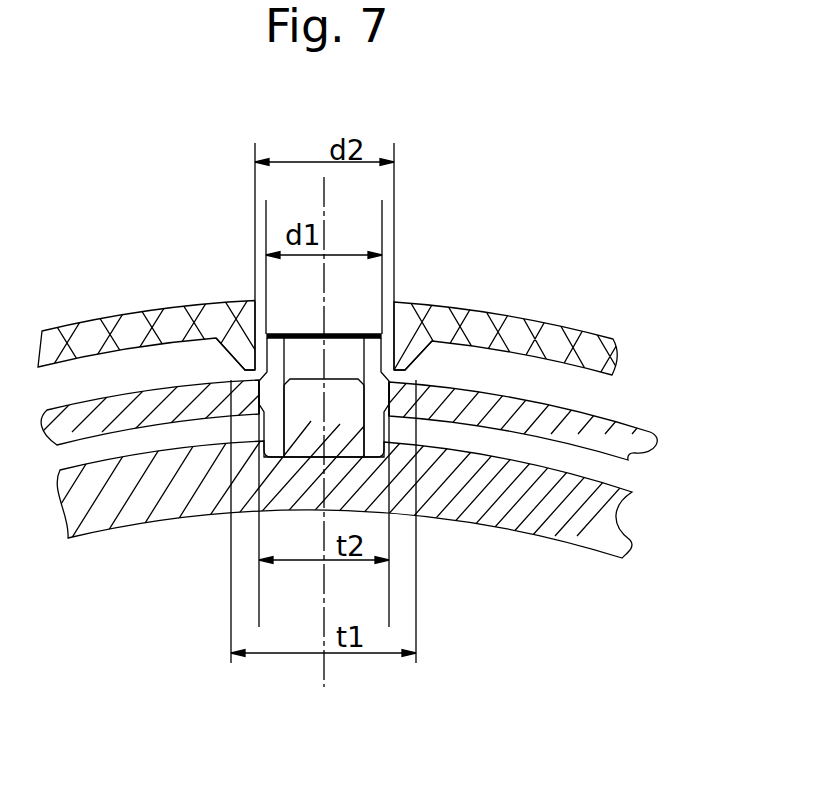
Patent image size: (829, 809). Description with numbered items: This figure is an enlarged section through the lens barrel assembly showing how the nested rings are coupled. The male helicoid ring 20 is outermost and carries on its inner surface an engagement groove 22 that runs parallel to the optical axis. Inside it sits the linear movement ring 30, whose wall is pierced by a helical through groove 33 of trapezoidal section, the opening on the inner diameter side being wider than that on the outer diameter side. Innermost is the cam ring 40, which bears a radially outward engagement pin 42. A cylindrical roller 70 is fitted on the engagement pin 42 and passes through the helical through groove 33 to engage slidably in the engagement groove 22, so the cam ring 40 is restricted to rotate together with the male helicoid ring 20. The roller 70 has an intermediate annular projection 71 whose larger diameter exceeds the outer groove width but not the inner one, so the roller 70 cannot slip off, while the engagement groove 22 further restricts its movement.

The male helicoid ring 20 is at (481, 332).
The engagement groove 22 is at (395, 363).
The linear movement ring 30 is at (612, 426).
The helical through groove 33 is at (398, 405).
The cam ring 40 is at (597, 527).
The engagement pin 42 is at (337, 438).
The cylindrical roller 70 is at (273, 355).
The annular projection 71 is at (223, 380).